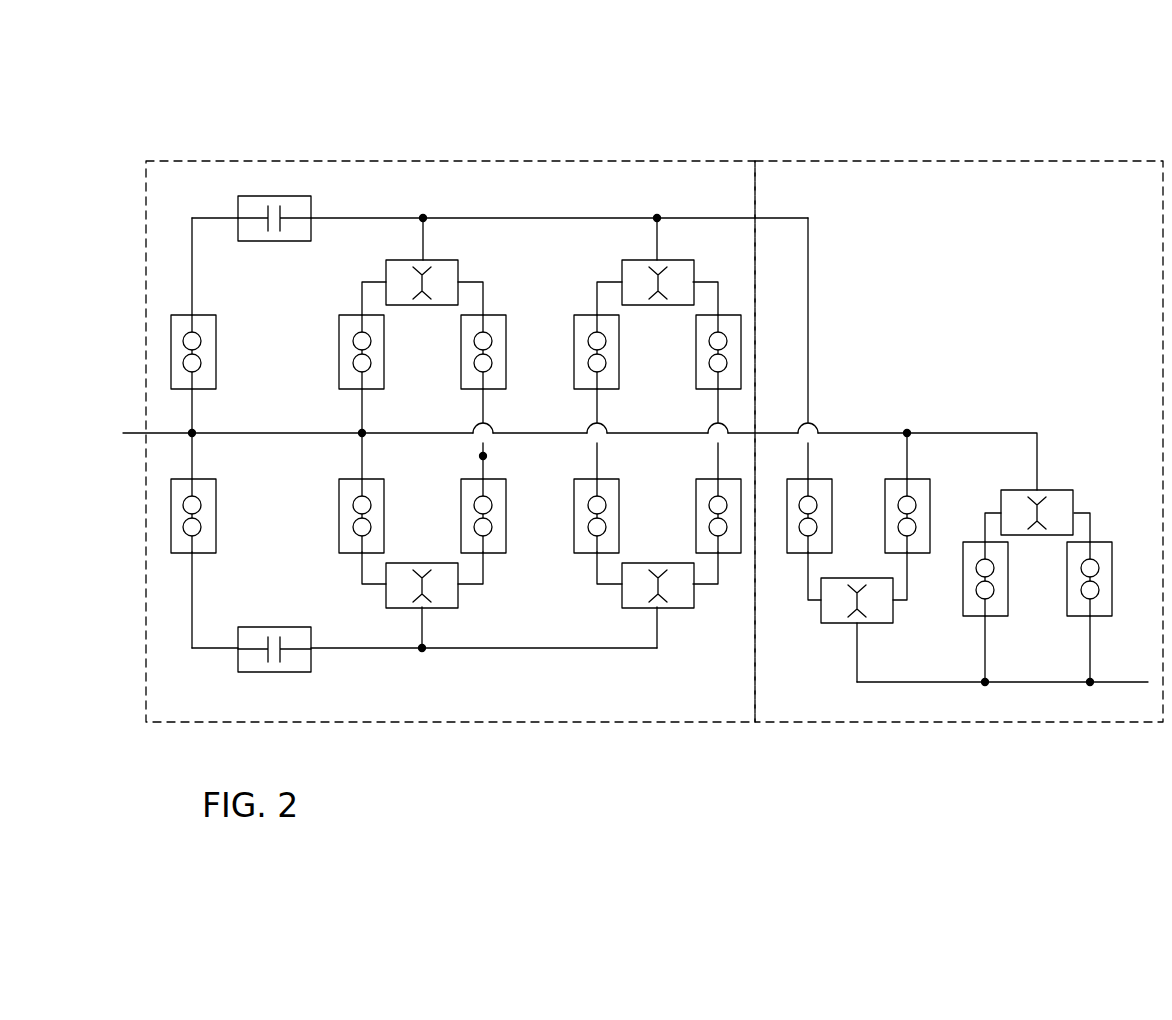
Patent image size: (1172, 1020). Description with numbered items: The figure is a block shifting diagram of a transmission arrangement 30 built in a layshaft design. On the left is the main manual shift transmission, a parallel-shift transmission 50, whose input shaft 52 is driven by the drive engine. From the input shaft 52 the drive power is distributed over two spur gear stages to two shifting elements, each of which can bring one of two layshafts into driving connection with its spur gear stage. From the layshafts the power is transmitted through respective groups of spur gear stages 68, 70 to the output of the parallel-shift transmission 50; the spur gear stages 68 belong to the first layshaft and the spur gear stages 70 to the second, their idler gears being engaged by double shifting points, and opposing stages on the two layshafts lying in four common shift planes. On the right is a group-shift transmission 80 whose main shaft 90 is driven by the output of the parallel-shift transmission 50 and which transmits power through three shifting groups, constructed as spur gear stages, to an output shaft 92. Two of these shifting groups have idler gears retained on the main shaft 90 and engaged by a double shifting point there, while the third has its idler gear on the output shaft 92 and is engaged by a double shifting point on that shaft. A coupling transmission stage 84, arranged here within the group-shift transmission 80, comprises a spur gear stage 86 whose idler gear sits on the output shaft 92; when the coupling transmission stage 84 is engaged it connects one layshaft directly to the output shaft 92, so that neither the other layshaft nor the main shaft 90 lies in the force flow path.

The transmission arrangement 30 is at (742, 100).
The parallel-shift transmission 50 is at (402, 161).
The input shaft 52 is at (135, 433).
The spur gear stages 68 is at (292, 280).
The spur gear stages 70 is at (298, 588).
The group-shift transmission 80 is at (987, 161).
The coupling transmission stage 84 is at (848, 241).
The spur gear stage 86 is at (831, 502).
The main shaft 90 is at (847, 433).
The output shaft 92 is at (947, 682).